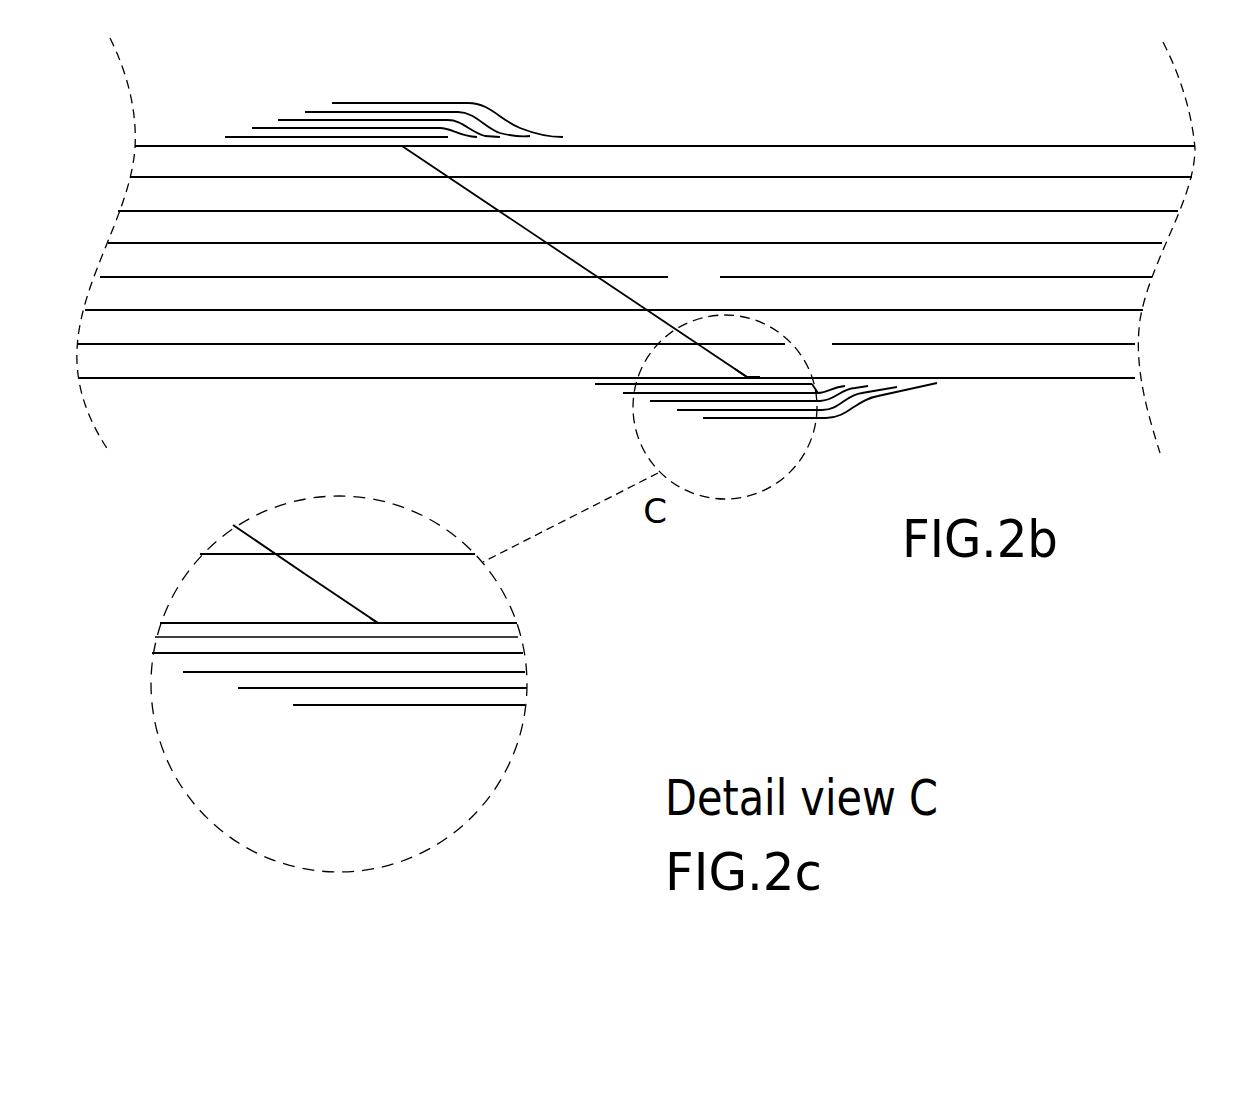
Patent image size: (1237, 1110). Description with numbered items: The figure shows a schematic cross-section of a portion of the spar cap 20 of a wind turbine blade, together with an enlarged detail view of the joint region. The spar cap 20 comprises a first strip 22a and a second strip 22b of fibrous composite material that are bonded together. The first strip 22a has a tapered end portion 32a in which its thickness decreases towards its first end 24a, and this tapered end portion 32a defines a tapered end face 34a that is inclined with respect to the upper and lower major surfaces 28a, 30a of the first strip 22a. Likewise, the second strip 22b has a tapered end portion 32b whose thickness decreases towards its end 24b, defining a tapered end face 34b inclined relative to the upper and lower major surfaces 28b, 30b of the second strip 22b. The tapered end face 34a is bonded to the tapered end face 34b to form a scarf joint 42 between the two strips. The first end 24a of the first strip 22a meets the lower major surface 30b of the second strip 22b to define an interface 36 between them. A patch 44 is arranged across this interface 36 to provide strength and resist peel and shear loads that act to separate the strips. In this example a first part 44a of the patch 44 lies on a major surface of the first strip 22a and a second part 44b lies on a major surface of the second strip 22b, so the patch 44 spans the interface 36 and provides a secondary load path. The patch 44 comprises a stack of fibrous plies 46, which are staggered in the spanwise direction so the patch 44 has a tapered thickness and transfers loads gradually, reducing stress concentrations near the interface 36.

In FIG. 2b, the spar cap 20 is at (600, 92).
In FIG. 2b, the first strip 22a is at (250, 368).
In FIG. 2c, the first strip 22a is at (187, 597).
In FIG. 2b, the second strip 22b is at (1055, 368).
In FIG. 2c, the second strip 22b is at (497, 590).
In FIG. 2c, the first end of the first strip 24a is at (337, 610).
In FIG. 2b, the end of the second strip 24b is at (703, 337).
In FIG. 2b, the upper major surface of the first strip 28a is at (327, 345).
In FIG. 2b, the upper major surface of the second strip 28b is at (1000, 345).
In FIG. 2b, the lower major surface of the first strip 30a is at (357, 380).
In FIG. 2b, the lower major surface of the second strip 30b is at (1025, 378).
In FIG. 2c, the lower major surface of the second strip 30b is at (492, 625).
In FIG. 2b, the tapered end portion of the first strip 32a is at (682, 353).
In FIG. 2b, the tapered end portion of the second strip 32b is at (732, 352).
In FIG. 2c, the tapered end face of the first strip 34a is at (293, 567).
In FIG. 2c, the tapered end face of the second strip 34b is at (357, 603).
In FIG. 2b, the interface 36 is at (750, 372).
In FIG. 2c, the interface 36 is at (373, 632).
In FIG. 2c, the scarf joint 42 is at (315, 568).
In FIG. 2b, the patch 44 is at (830, 433).
In FIG. 2c, the patch 44 is at (347, 730).
In FIG. 2b, the first part of the patch 44a is at (657, 423).
In FIG. 2b, the second part of the patch 44b is at (882, 413).
In FIG. 2b, the fibrous plies 46 is at (753, 422).
In FIG. 2c, the fibrous plies 46 is at (215, 672).